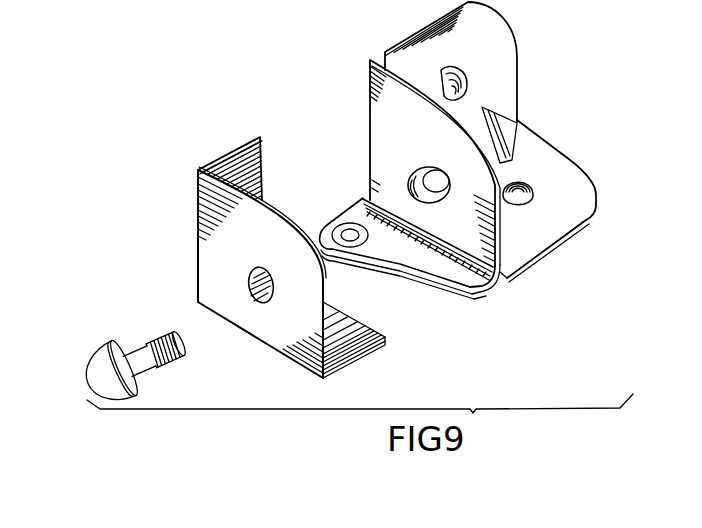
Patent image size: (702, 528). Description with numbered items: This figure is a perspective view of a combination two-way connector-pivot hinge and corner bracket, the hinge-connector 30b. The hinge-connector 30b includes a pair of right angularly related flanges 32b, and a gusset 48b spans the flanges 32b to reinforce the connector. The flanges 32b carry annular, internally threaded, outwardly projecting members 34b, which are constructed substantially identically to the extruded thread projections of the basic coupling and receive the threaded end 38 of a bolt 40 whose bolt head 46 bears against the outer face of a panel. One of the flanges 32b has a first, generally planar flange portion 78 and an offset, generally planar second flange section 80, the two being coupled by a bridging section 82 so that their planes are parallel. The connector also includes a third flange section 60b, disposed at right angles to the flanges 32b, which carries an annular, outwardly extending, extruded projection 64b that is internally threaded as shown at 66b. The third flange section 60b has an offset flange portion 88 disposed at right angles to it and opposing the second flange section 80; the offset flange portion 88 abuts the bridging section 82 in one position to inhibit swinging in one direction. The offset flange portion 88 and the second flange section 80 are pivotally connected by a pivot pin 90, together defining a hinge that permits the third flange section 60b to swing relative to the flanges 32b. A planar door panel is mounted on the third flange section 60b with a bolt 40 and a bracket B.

The bracket B is at (198, 165).
The hinge-connector 30b is at (347, 125).
The flanges 32b is at (598, 207).
The internally threaded outwardly projecting members 34b is at (441, 80).
The threaded end 38 is at (170, 352).
The bolt 40 is at (137, 352).
The bolt head 46 is at (90, 368).
The gusset 48b is at (504, 133).
The third flange section 60b is at (321, 83).
The extruded projection 64b is at (418, 172).
The internal threads 66b is at (410, 184).
The first flange portion 78 is at (558, 236).
The second flange section 80 is at (494, 288).
The bridging section 82 is at (504, 282).
The offset flange portion 88 is at (463, 286).
The pivot pin 90 is at (350, 235).